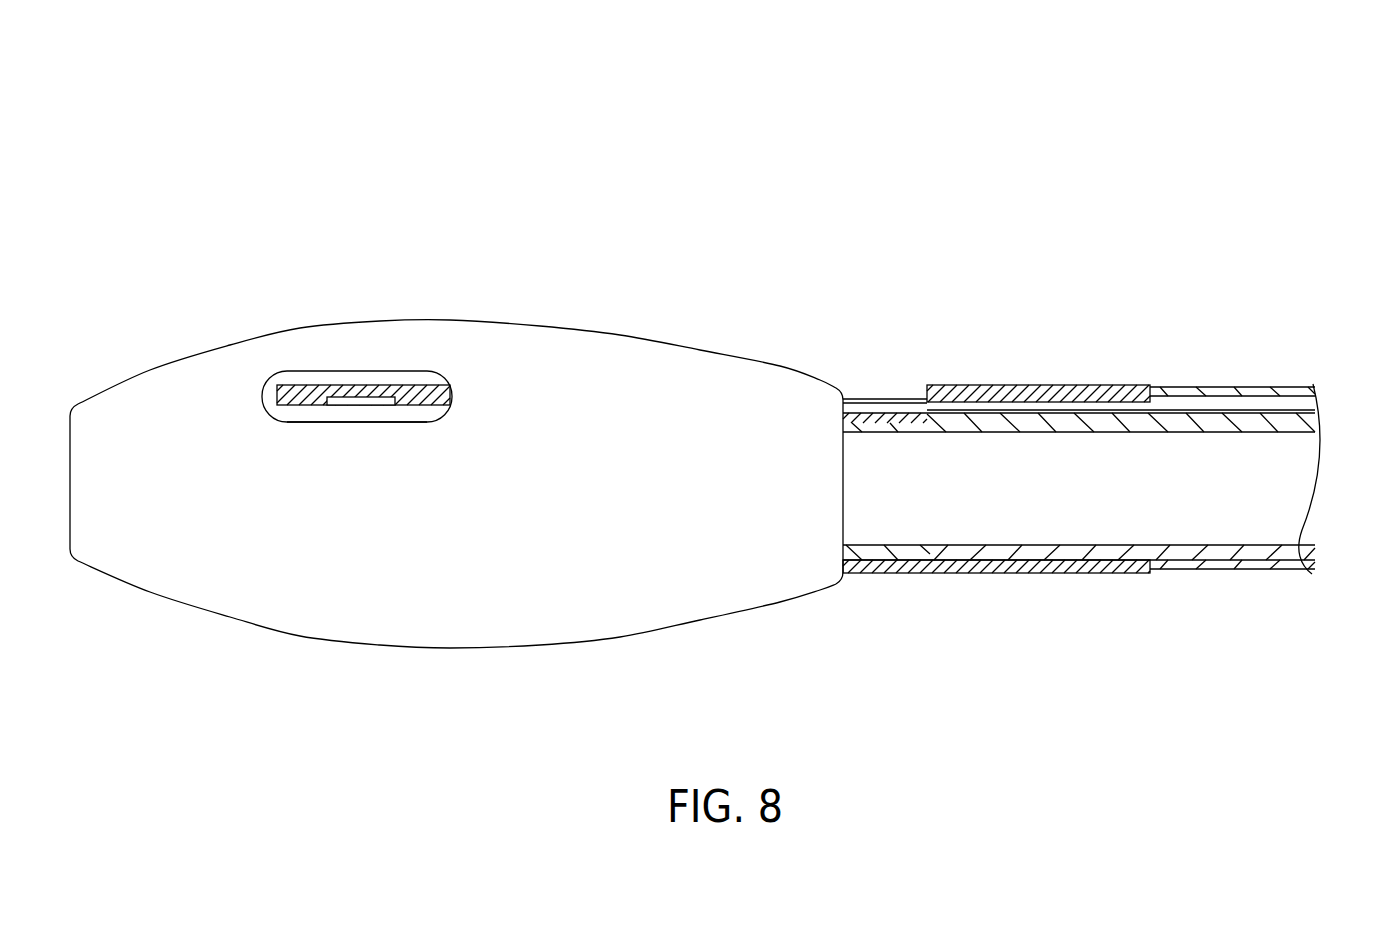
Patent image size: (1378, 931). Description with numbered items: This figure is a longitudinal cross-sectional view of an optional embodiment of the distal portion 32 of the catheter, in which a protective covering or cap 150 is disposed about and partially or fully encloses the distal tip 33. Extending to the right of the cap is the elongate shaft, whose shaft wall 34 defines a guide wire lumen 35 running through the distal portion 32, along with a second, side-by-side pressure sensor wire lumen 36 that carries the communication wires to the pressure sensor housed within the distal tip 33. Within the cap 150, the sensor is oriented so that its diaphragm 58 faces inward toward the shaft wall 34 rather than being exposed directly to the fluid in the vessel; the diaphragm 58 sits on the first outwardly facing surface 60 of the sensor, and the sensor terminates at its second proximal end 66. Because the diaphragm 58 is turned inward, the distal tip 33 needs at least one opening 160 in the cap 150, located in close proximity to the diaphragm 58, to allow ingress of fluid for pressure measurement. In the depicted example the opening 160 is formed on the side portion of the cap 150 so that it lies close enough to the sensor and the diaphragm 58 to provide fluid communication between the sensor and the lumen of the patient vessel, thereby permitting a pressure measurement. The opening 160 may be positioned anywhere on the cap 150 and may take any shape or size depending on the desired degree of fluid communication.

The distal portion 32 is at (926, 684).
The distal tip 33 is at (352, 195).
The shaft wall 34 is at (1195, 563).
The guide wire lumen 35 is at (848, 501).
The pressure sensor wire lumen 36 is at (1289, 389).
The diaphragm 58 is at (363, 397).
The first outwardly facing surface 60 is at (307, 410).
The second proximal end 66 is at (306, 386).
The protective covering or cap 150 is at (699, 393).
The opening 160 is at (357, 422).